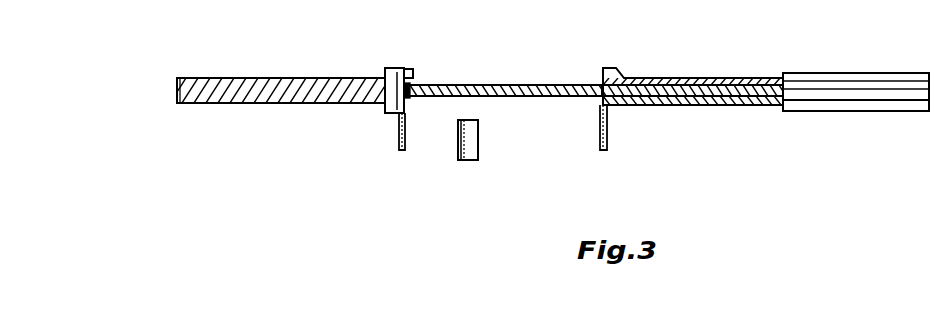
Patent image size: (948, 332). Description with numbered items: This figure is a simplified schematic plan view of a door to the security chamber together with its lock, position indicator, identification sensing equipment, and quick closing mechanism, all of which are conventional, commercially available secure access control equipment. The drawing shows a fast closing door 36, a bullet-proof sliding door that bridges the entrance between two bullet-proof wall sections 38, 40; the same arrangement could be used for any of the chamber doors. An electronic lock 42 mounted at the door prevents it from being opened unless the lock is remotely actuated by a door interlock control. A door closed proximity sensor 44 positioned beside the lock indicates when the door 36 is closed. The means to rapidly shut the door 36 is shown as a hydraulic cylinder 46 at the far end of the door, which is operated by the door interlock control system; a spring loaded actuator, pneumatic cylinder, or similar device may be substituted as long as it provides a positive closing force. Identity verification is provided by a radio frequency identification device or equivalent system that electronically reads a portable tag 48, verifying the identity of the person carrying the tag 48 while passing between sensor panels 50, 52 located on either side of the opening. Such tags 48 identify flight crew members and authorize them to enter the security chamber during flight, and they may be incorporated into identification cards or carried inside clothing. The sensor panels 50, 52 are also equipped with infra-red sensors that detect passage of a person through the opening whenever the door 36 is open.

The fast closing door 36 is at (527, 97).
The bullet-proof wall section 38 is at (653, 105).
The bullet-proof wall section 40 is at (290, 103).
The electronic lock 42 is at (393, 68).
The door closed proximity sensor 44 is at (408, 68).
The hydraulic cylinder 46 is at (811, 93).
The portable tag 48 is at (460, 158).
The sensor panel 50 is at (400, 142).
The sensor panel 52 is at (600, 148).